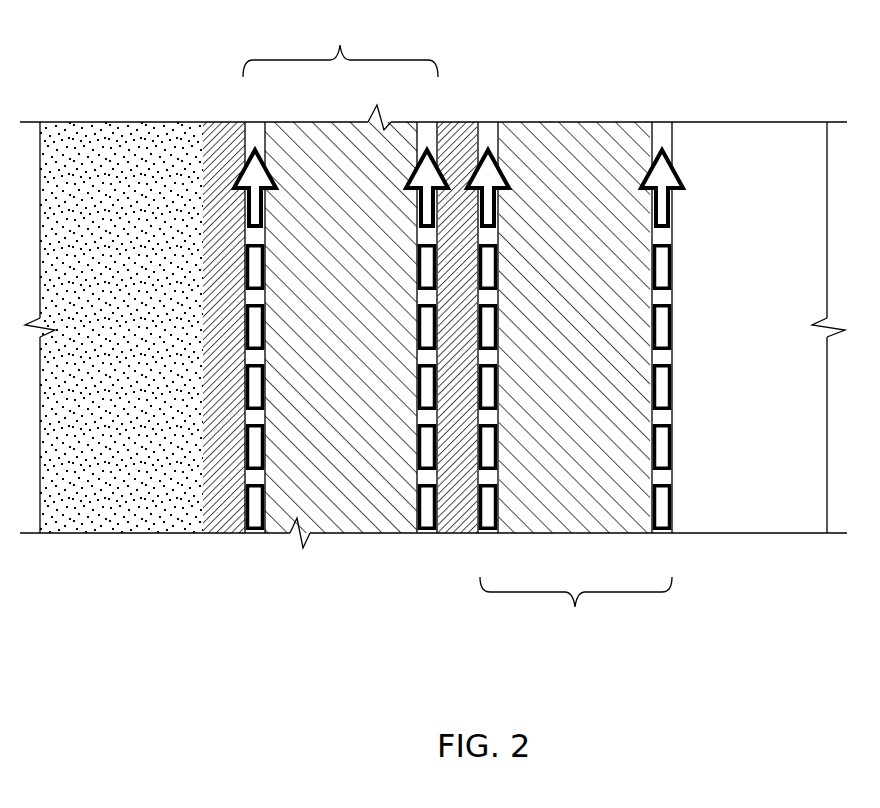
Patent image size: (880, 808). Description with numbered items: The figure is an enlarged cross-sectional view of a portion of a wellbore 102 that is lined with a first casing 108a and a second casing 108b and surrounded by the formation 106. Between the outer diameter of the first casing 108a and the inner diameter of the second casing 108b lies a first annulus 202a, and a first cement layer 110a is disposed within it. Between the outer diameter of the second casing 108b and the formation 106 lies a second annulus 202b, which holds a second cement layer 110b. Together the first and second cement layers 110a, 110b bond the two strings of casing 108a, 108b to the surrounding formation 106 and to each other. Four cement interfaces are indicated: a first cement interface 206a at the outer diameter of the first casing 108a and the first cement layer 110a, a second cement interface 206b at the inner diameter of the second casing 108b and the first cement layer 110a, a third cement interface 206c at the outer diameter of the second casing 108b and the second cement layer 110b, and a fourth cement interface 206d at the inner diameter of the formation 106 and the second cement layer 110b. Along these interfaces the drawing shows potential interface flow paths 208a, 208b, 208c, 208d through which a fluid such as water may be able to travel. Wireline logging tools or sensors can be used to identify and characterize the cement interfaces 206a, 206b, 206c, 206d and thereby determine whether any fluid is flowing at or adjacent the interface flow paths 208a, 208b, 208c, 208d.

The wellbore 102 is at (334, 656).
The formation 106 is at (788, 327).
The first casing 108a is at (212, 533).
The second casing 108b is at (457, 533).
The first cement layer 110a is at (341, 327).
The second cement layer 110b is at (574, 327).
The first annulus 202a is at (340, 47).
The second annulus 202b is at (576, 609).
The first cement interface 206a is at (254, 124).
The second cement interface 206b is at (428, 124).
The third cement interface 206c is at (489, 124).
The fourth cement interface 206d is at (662, 124).
The interface flow path 208a is at (250, 533).
The interface flow path 208b is at (417, 462).
The interface flow path 208c is at (498, 462).
The interface flow path 208d is at (673, 500).